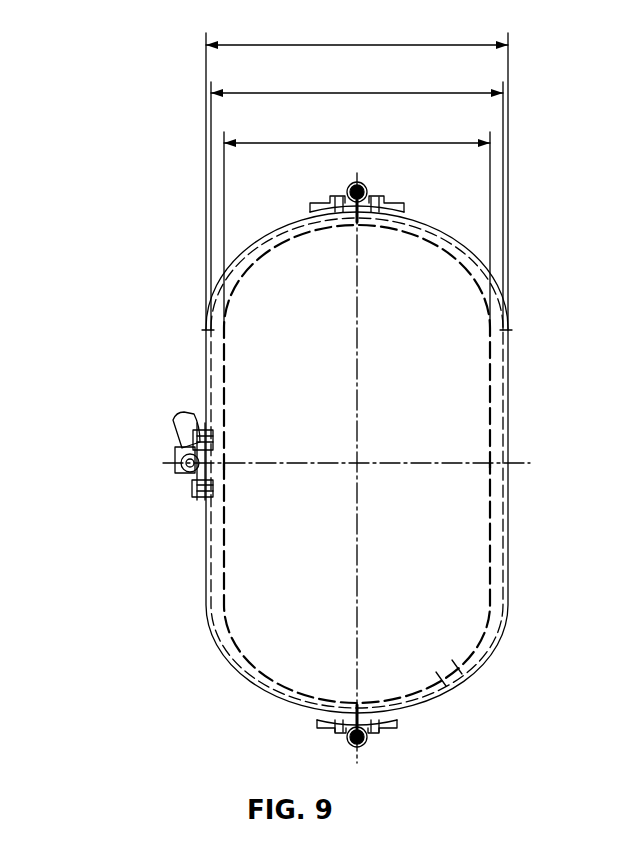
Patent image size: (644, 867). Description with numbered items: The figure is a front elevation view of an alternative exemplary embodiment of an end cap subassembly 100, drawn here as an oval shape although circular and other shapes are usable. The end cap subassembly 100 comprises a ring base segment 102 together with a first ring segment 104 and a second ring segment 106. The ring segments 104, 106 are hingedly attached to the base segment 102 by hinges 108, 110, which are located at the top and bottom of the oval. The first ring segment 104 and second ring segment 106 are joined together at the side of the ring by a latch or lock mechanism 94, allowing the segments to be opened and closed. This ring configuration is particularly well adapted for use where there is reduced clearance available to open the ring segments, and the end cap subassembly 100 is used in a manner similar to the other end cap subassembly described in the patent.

The latch mechanism 94 is at (170, 440).
The end cap subassembly 100 is at (181, 368).
The ring base segment 102 is at (510, 424).
The first ring segment 104 is at (258, 270).
The second ring segment 106 is at (233, 620).
The hinge 108 is at (372, 188).
The hinge 110 is at (385, 735).